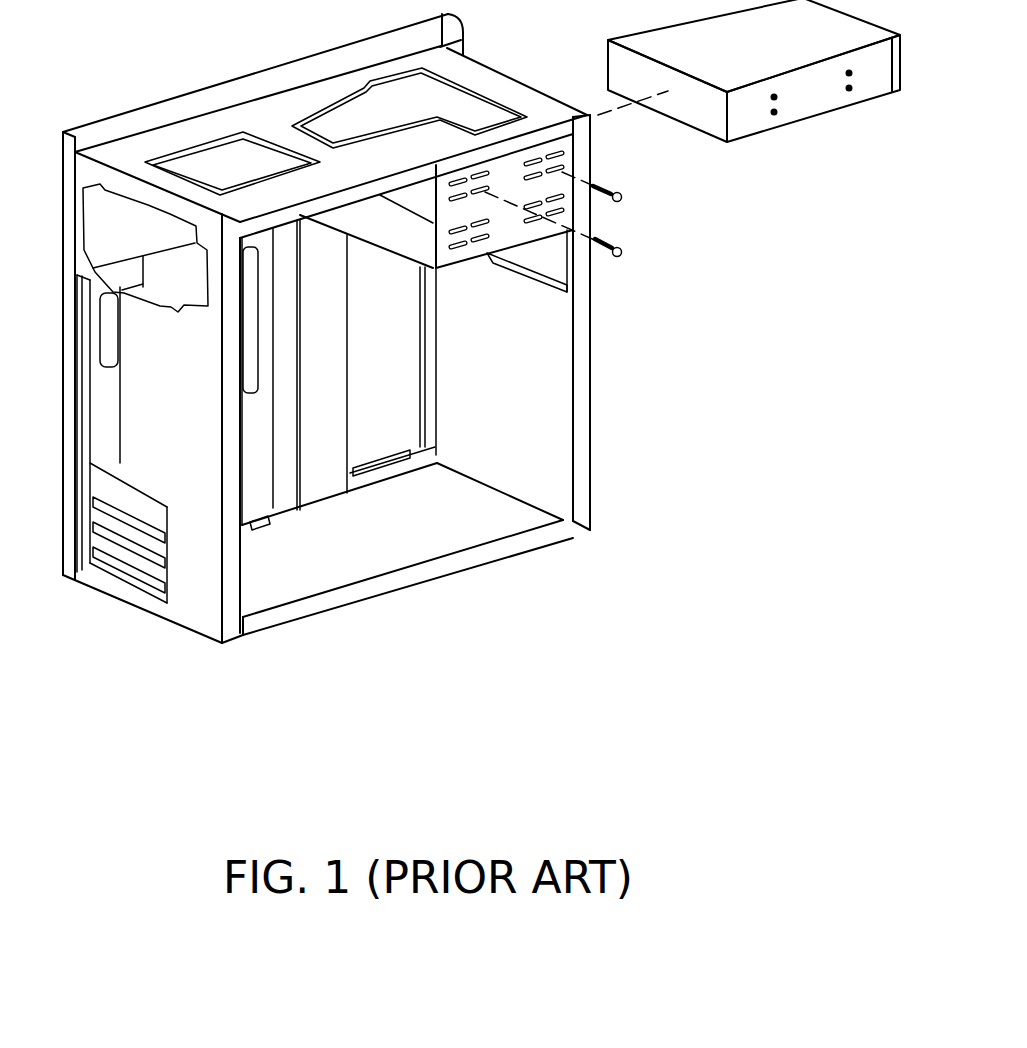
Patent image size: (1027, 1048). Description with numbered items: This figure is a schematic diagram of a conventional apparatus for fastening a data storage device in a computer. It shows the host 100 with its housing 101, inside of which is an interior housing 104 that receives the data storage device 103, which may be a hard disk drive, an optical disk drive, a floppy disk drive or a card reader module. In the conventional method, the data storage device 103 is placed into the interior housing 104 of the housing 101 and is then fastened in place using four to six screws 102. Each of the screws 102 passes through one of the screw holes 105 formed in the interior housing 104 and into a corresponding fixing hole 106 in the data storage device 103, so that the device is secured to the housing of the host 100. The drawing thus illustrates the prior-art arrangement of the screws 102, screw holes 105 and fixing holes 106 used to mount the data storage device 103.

The host 100 is at (478, 351).
The housing 101 is at (585, 492).
The screws 102 is at (623, 198).
The data storage device 103 is at (756, 100).
The interior housing 104 is at (498, 235).
The screw holes 105 is at (560, 168).
The fixing holes 106 is at (850, 91).